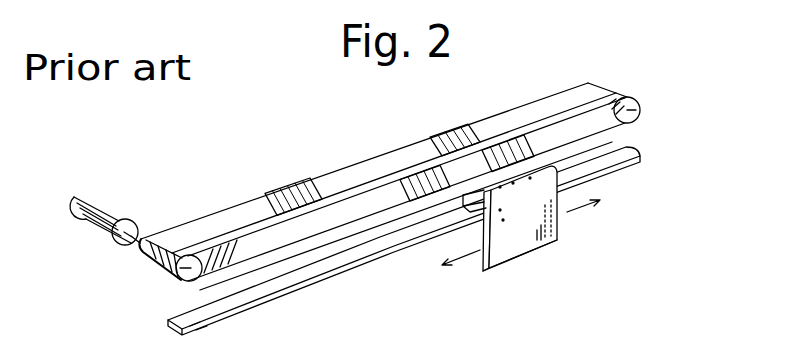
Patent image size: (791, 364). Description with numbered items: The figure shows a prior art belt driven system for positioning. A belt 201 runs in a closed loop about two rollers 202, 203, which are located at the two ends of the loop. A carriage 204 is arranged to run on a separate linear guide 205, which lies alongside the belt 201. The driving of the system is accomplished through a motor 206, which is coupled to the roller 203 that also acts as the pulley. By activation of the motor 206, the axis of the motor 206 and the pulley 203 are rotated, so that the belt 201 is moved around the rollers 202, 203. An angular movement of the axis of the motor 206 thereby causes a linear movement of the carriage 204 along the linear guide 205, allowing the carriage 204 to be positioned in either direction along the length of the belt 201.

The belt 201 is at (452, 132).
The roller 202 is at (637, 104).
The roller 203 is at (175, 277).
The carriage 204 is at (552, 243).
The linear guide 205 is at (243, 292).
The motor 206 is at (105, 212).